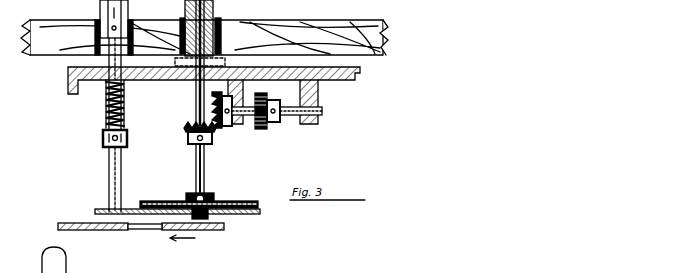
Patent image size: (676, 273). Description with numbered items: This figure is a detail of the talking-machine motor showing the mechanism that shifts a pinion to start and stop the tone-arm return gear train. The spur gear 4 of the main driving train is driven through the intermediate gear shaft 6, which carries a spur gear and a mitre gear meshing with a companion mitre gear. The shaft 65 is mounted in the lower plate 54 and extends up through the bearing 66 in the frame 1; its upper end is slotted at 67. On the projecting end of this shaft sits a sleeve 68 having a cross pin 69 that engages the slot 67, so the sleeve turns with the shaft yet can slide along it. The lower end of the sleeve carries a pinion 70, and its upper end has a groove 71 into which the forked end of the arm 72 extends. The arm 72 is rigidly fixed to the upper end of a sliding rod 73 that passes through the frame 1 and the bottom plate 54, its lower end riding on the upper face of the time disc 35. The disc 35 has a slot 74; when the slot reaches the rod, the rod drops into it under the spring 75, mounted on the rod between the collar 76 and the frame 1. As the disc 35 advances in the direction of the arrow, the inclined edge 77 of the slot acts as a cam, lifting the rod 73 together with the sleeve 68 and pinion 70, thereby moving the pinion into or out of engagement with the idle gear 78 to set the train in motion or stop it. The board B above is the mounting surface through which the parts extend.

The board B is at (380, 50).
The frame 1 is at (66, 72).
The spur gear 4 is at (155, 201).
The intermediate gear shaft 6 is at (290, 120).
The time wheel or disc 35 is at (63, 223).
The lower plate 54 is at (258, 215).
The shaft 65 is at (208, 174).
The bearing 66 is at (193, 84).
The slot 67 is at (230, 22).
The sleeve 68 is at (214, 8).
The cross pin 69 is at (133, 28).
The pinion 70 is at (220, 62).
The groove 71 is at (259, 4).
The arm 72 is at (123, 19).
The sliding rod 73 is at (108, 176).
The slot 74 is at (145, 232).
The spring 75 is at (105, 116).
The collar 76 is at (128, 140).
The inclined edge 77 is at (162, 232).
The idle gear 78 is at (150, 84).